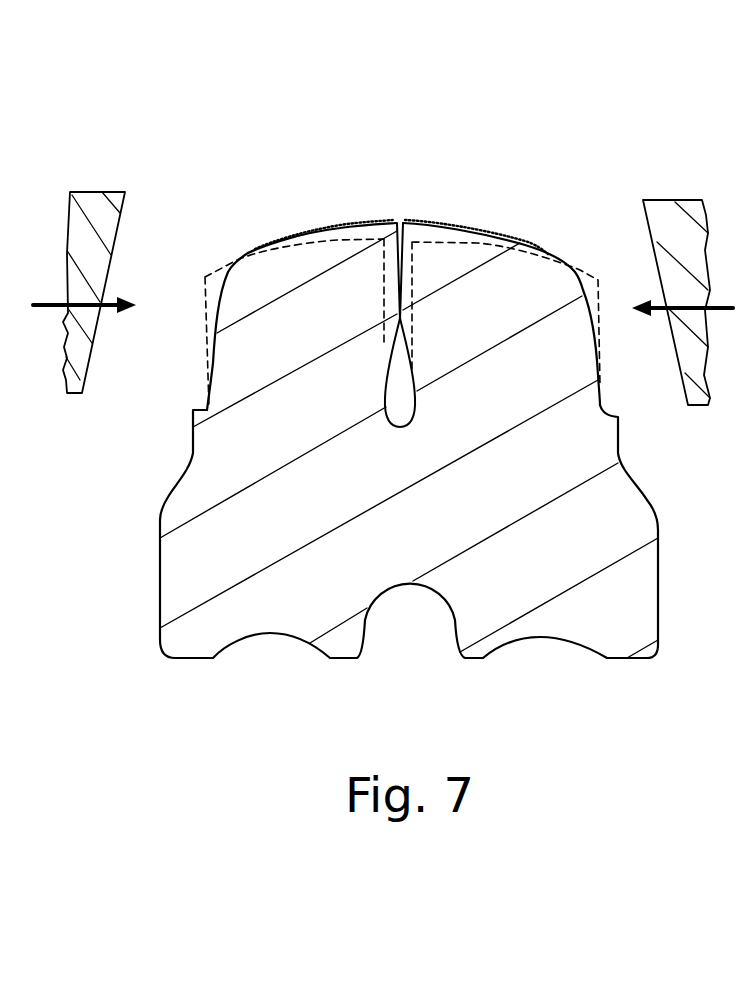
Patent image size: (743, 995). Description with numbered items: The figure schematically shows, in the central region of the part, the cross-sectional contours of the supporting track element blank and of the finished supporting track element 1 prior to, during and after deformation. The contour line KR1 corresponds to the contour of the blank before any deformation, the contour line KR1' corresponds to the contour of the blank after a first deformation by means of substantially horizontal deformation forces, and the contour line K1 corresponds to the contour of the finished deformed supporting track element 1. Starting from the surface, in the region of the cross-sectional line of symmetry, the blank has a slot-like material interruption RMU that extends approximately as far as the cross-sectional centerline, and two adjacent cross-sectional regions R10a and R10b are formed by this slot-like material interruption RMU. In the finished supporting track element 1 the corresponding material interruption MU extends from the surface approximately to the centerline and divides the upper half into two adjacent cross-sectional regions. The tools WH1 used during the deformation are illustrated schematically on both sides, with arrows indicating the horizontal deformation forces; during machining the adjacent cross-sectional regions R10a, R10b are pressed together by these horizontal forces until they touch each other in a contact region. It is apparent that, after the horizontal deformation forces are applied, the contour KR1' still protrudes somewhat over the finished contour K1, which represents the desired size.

The supporting track element 1 is at (407, 101).
The horizontal deformation tool WH1 is at (97, 217).
The cross-sectional region of the blank R10a is at (250, 272).
The cross-sectional region of the blank R10b is at (550, 290).
The contour line of the finished supporting track element K1 is at (267, 240).
The contour line of the blank prior to deformation KR1 is at (368, 313).
The contour line of the blank after first deformation KR1' is at (401, 199).
The material interruption MU is at (398, 383).
The slot-like material interruption RMU is at (384, 341).